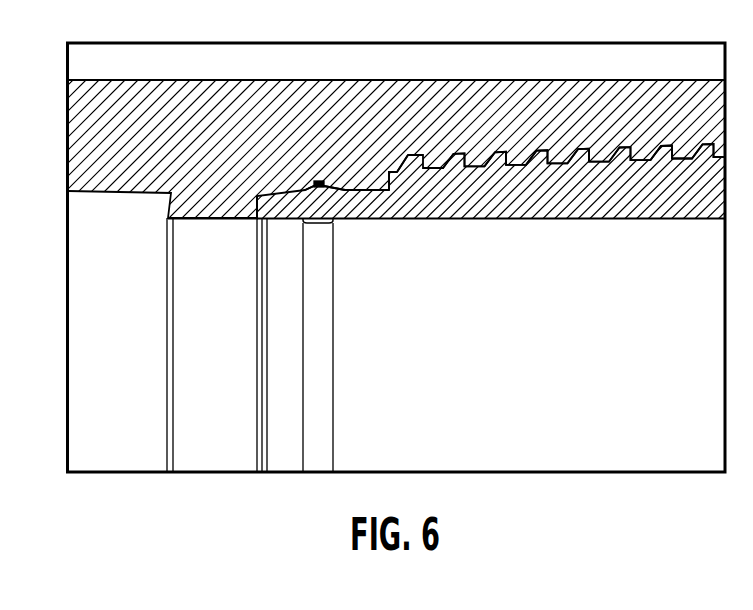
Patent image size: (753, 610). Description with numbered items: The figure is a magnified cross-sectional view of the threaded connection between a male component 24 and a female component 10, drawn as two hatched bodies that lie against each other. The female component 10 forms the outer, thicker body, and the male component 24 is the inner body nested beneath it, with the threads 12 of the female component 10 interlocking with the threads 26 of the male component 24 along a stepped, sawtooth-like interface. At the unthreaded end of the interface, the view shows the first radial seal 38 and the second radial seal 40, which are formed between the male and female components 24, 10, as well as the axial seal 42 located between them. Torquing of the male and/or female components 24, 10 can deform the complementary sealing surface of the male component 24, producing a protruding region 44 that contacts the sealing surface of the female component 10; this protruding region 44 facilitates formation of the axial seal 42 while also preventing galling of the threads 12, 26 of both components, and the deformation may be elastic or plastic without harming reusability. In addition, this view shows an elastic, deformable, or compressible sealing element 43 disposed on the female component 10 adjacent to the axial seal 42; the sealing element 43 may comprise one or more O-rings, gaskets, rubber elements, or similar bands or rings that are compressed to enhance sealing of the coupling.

The female component 10 is at (458, 103).
The pipe threads 12 is at (517, 163).
The male component 24 is at (629, 197).
The fitting threads 26 is at (540, 166).
The first radial seal 38 is at (252, 218).
The second radial seal 40 is at (395, 179).
The axial seal 42 is at (324, 182).
The sealing element 43 is at (316, 183).
The protruding region 44 is at (321, 220).